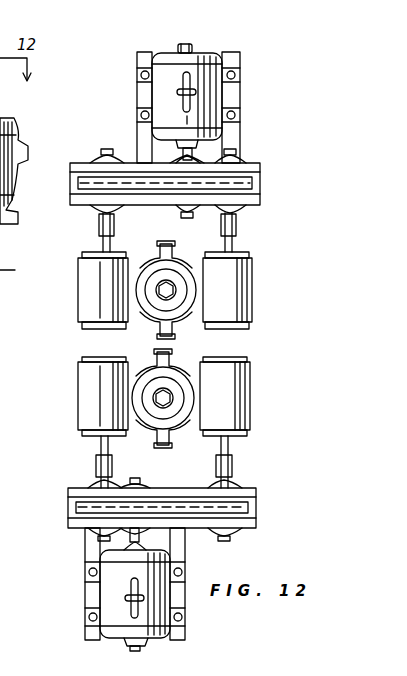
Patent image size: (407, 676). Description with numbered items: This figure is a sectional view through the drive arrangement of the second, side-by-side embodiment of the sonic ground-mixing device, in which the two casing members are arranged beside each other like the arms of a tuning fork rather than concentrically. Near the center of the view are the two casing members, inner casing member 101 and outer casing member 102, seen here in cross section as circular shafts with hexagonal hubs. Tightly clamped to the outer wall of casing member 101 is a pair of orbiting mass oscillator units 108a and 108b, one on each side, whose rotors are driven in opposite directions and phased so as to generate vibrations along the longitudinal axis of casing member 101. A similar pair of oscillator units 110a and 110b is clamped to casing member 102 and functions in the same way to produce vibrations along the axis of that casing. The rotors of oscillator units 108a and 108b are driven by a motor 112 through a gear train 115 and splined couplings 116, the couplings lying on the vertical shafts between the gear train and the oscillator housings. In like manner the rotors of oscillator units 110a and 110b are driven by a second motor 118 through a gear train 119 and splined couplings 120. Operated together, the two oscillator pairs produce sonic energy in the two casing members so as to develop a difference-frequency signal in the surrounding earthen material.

The inner casing member 101 is at (193, 370).
The outer casing member 102 is at (186, 262).
The orbiting mass oscillator unit 108a is at (95, 408).
The orbiting mass oscillator unit 108b is at (248, 402).
The orbiting mass oscillator unit 110a is at (87, 308).
The orbiting mass oscillator unit 110b is at (240, 298).
The motor 112 is at (0, 120).
The gear train 115 is at (148, 512).
The splined couplings 116 is at (101, 466).
The motor 118 is at (216, 58).
The gear train 119 is at (159, 186).
The splined couplings 120 is at (105, 224).